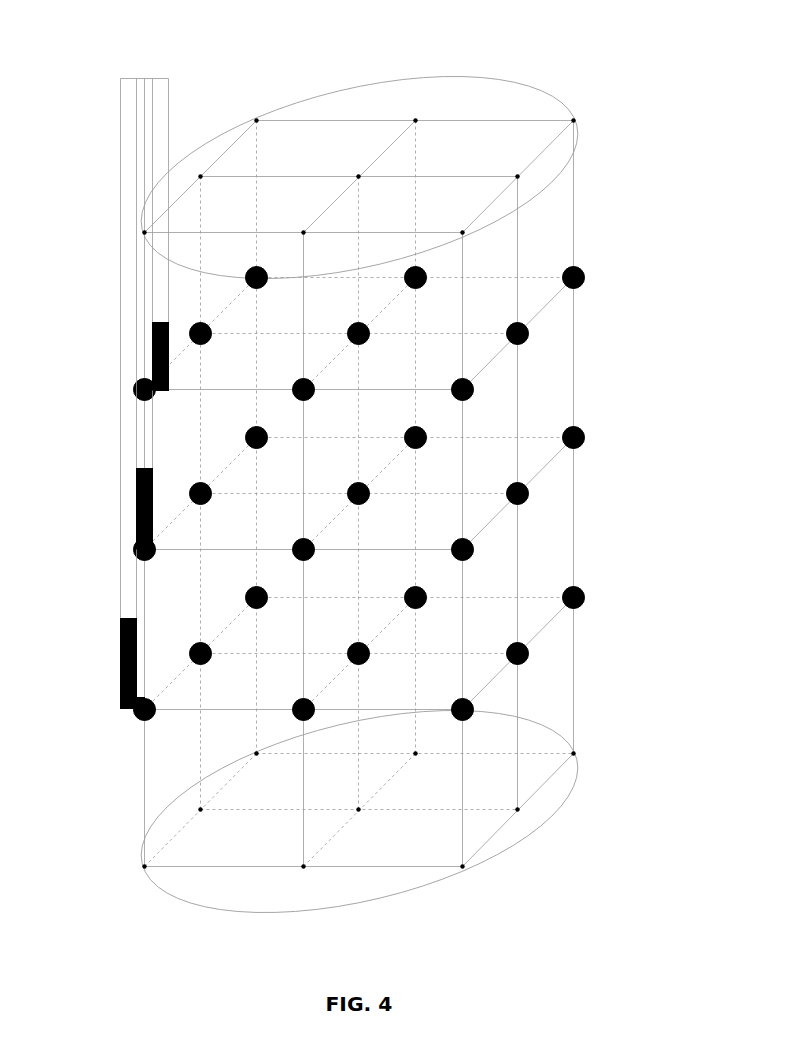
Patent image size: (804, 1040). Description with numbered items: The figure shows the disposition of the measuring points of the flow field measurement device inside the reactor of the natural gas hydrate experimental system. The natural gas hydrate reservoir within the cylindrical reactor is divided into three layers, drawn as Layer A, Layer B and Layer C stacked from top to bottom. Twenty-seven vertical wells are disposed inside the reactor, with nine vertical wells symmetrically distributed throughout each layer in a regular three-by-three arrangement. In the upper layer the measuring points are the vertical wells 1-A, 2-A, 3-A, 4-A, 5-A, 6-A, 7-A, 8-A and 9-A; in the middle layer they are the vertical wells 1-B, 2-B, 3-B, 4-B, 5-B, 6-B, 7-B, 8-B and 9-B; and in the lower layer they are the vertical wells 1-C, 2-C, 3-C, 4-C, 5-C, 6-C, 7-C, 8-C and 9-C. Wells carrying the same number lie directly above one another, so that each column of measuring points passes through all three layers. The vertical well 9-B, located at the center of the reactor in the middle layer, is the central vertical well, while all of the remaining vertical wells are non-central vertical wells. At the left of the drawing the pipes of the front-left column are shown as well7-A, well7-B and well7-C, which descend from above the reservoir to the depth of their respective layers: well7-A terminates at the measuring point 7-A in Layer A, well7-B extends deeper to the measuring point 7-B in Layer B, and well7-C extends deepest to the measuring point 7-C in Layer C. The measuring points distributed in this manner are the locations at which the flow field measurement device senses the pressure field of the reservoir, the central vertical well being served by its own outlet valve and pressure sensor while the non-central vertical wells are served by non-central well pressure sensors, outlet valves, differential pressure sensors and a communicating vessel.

The vertical well 1-A is at (270, 269).
The vertical well 2-A is at (431, 269).
The vertical well 3-A is at (589, 267).
The vertical well 4-A is at (538, 332).
The vertical well 5-A is at (482, 390).
The vertical well 6-A is at (326, 385).
The vertical well 7-A is at (162, 385).
The vertical well 8-A is at (220, 328).
The vertical well 9-A is at (379, 328).
The vertical well 1-B is at (270, 432).
The vertical well 2-B is at (431, 432).
The vertical well 3-B is at (589, 431).
The vertical well 4-B is at (533, 488).
The vertical well 5-B is at (478, 543).
The vertical well 6-B is at (320, 545).
The vertical well 7-B is at (161, 545).
The vertical well 8-B is at (219, 490).
The central vertical well 9-B is at (376, 490).
The vertical well 1-C is at (270, 590).
The vertical well 2-C is at (431, 590).
The vertical well 3-C is at (594, 586).
The vertical well 4-C is at (538, 648).
The vertical well 5-C is at (483, 704).
The vertical well 6-C is at (327, 705).
The vertical well 7-C is at (167, 704).
The vertical well 8-C is at (220, 649).
The vertical well 9-C is at (379, 649).
The vertical well pipe well7-A is at (168, 93).
The vertical well pipe well7-B is at (145, 92).
The vertical well pipe well7-C is at (130, 128).
The reservoir layer Layer A is at (586, 284).
The reservoir layer Layer B is at (586, 443).
The reservoir layer Layer C is at (586, 603).